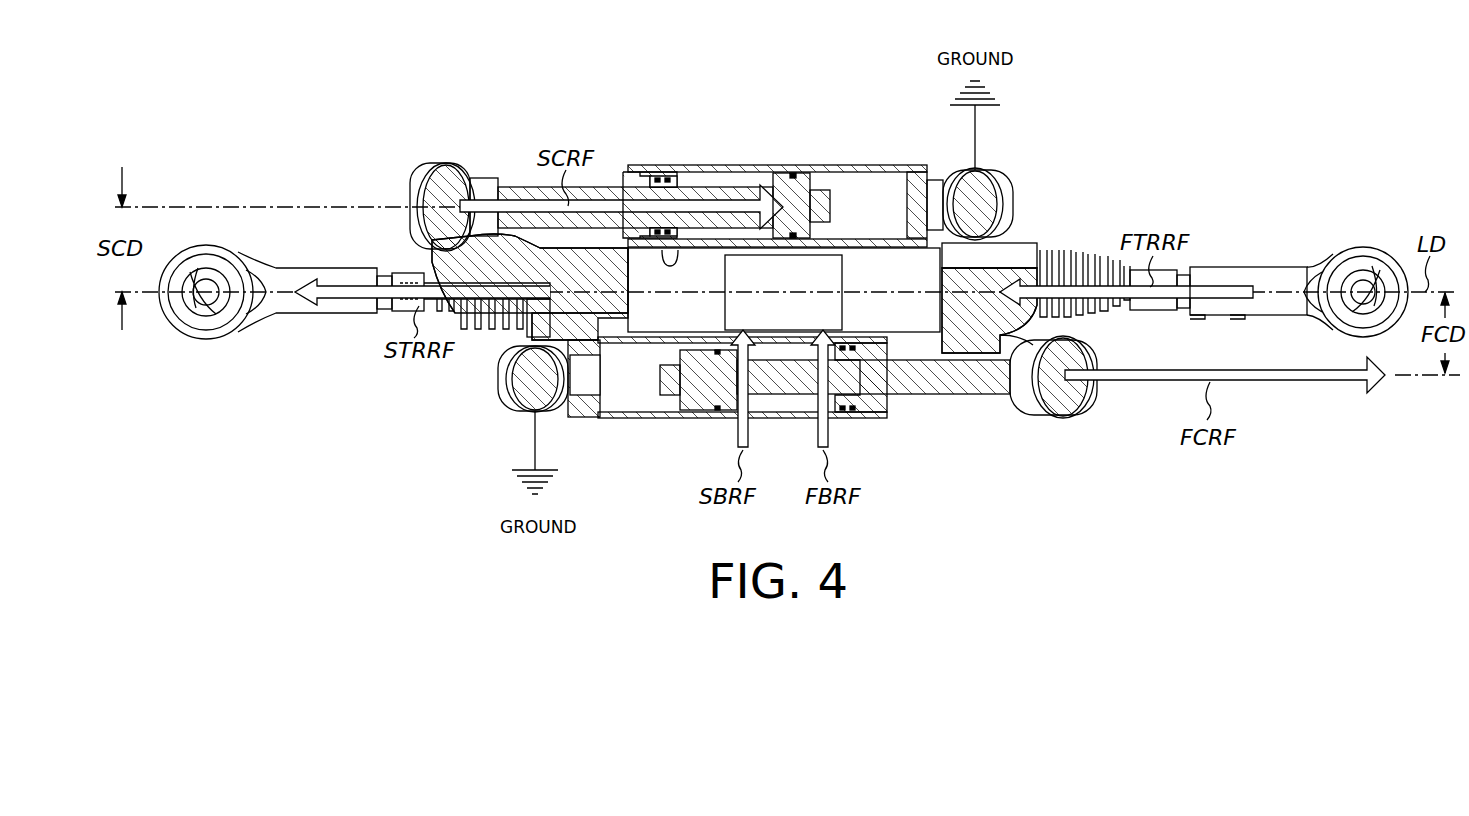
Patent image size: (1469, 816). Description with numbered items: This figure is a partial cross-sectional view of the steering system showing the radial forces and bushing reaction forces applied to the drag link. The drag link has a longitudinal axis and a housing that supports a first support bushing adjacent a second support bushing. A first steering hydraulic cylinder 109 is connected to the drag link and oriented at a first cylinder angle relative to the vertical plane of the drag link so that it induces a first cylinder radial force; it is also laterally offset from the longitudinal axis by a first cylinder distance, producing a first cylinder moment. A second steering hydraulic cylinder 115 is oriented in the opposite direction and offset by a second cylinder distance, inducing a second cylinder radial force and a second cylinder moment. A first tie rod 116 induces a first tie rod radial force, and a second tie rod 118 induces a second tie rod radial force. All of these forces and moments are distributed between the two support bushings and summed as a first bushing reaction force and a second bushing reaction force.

The first steering hydraulic cylinder 109 is at (945, 396).
The second steering hydraulic cylinder 115 is at (843, 165).
The first tie rod 116 is at (1150, 312).
The second tie rod 118 is at (320, 314).